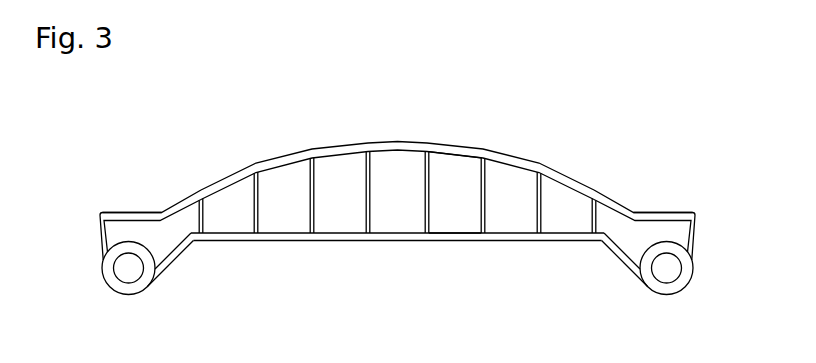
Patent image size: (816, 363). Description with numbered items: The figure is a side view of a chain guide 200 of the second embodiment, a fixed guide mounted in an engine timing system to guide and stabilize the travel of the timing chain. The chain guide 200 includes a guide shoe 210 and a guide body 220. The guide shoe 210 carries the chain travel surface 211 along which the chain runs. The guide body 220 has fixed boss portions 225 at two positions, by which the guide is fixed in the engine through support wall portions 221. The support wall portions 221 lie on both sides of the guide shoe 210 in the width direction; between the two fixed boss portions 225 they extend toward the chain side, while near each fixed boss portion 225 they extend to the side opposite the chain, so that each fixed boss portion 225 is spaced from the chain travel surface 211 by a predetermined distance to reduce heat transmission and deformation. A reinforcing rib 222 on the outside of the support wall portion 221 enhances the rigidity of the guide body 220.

The chain guide 200 is at (90, 154).
The guide shoe 210 is at (135, 216).
The chain travel surface 211 is at (142, 211).
The guide body 220 is at (303, 242).
The support wall portion 221 is at (453, 206).
The reinforcing rib 222 is at (313, 195).
The fixed boss portion 225 is at (145, 282).